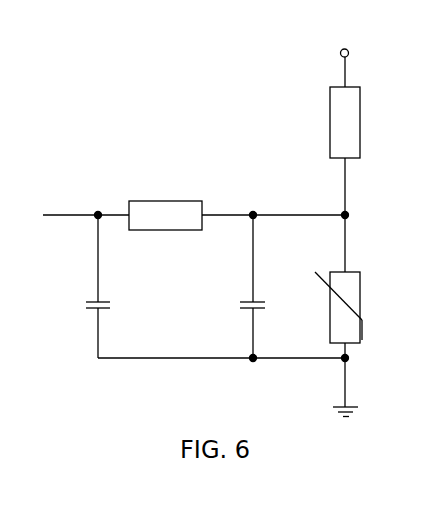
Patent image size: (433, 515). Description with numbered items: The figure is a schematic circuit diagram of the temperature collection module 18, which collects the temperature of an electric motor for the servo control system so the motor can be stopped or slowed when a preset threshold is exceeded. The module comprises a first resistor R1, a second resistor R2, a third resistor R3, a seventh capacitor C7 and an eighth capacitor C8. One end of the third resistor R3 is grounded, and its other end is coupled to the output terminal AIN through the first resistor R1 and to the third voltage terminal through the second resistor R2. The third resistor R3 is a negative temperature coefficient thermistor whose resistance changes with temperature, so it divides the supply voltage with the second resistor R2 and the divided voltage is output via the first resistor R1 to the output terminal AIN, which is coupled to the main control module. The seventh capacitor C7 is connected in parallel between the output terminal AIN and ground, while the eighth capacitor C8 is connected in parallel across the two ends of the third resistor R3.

The temperature collection module 18 is at (187, 65).
The first resistor R1 is at (165, 204).
The second resistor R2 is at (359, 122).
The third resistor R3 is at (352, 307).
The seventh capacitor C7 is at (107, 286).
The eighth capacitor C8 is at (262, 286).
The output terminal AIN is at (85, 203).